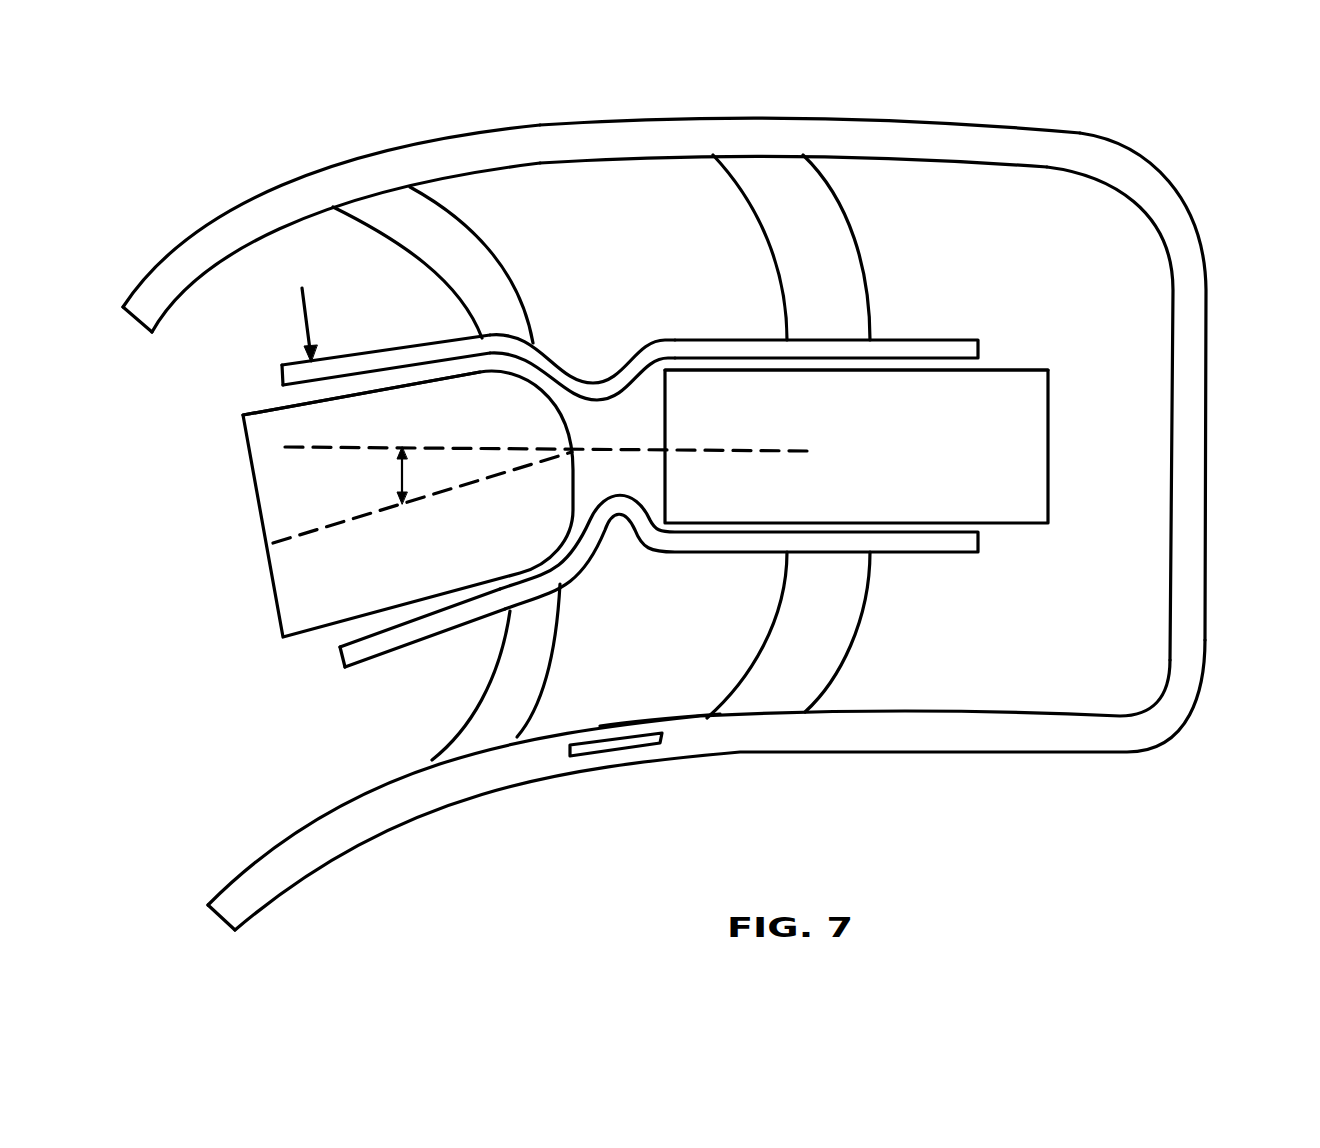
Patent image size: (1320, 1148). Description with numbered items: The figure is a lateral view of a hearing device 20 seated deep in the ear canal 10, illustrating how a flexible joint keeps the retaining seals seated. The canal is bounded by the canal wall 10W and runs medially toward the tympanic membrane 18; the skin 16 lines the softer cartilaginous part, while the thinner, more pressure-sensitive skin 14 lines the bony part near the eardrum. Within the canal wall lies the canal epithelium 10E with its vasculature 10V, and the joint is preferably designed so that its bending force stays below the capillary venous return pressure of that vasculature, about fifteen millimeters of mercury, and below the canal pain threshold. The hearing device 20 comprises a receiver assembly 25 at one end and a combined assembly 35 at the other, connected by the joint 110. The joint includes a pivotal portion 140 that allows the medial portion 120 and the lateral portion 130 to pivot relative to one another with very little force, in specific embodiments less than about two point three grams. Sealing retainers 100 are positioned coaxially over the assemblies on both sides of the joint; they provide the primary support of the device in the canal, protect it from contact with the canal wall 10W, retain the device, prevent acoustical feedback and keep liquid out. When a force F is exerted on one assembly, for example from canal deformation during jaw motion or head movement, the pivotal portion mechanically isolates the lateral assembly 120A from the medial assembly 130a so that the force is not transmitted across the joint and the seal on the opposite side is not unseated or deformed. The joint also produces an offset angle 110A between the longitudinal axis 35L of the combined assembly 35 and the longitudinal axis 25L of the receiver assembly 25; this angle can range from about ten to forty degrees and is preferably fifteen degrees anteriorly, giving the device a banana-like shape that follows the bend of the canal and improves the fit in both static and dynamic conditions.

The ear canal 10 is at (695, 488).
The canal wall 10W is at (748, 130).
The skin in the bony region 14 is at (958, 140).
The skin in the cartilaginous region 16 is at (197, 254).
The tympanic membrane 18 is at (1187, 632).
The canal epithelium 10E is at (673, 737).
The vasculature of the canal epithelium 10V is at (620, 757).
The hearing device 20 is at (592, 484).
The medial portion 120 is at (280, 373).
The pivotal portion 140 is at (592, 383).
The lateral portion 130 is at (930, 340).
The medial assembly 130a is at (1023, 370).
The joint 110 is at (340, 657).
The sealing retainer 100 is at (787, 633).
The combined assembly 35 is at (256, 487).
The lateral assembly 120A is at (257, 427).
The receiver assembly 25 is at (1028, 473).
The longitudinal axis of speaker assembly 25L is at (782, 450).
The longitudinal axis of combined assembly 35L is at (300, 538).
The offset angle 110A is at (393, 473).
The force F is at (300, 312).